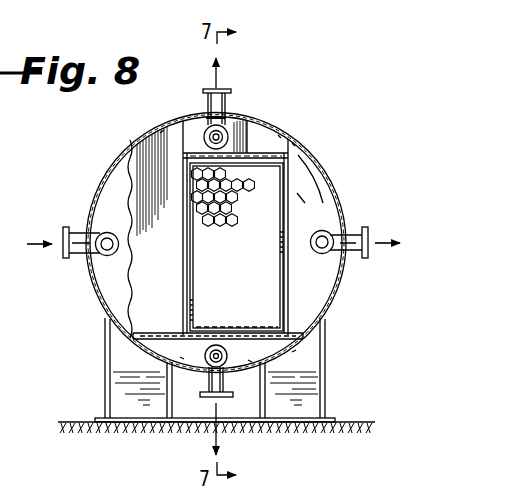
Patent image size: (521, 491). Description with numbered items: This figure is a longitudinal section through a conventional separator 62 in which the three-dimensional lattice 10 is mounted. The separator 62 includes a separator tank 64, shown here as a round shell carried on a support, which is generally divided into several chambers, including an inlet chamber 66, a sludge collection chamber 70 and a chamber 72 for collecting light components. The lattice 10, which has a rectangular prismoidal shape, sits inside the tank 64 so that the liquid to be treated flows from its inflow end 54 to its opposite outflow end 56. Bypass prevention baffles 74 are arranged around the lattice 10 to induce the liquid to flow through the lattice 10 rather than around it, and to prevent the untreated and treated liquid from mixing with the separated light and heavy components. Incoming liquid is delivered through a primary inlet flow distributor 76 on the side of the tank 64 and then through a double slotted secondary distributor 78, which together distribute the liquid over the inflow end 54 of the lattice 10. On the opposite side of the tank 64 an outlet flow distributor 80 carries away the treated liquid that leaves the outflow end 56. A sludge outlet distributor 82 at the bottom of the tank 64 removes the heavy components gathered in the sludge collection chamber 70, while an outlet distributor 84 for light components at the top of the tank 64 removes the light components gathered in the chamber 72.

The three-dimensional lattice 10 is at (267, 213).
The inflow end 54 is at (183, 270).
The outflow end 56 is at (285, 178).
The separator 62 is at (98, 334).
The separator tank 64 is at (335, 305).
The inlet chamber 66 is at (110, 190).
The sludge collection chamber 70 is at (197, 360).
The chamber for collecting light components 72 is at (250, 132).
The bypass prevention baffles 74 is at (160, 133).
The primary inlet flow distributor 76 is at (103, 256).
The double slotted secondary distributor 78 is at (150, 153).
The outlet flow distributor 80 is at (325, 232).
The sludge outlet distributor 82 is at (229, 372).
The outlet distributor for light components 84 is at (235, 113).